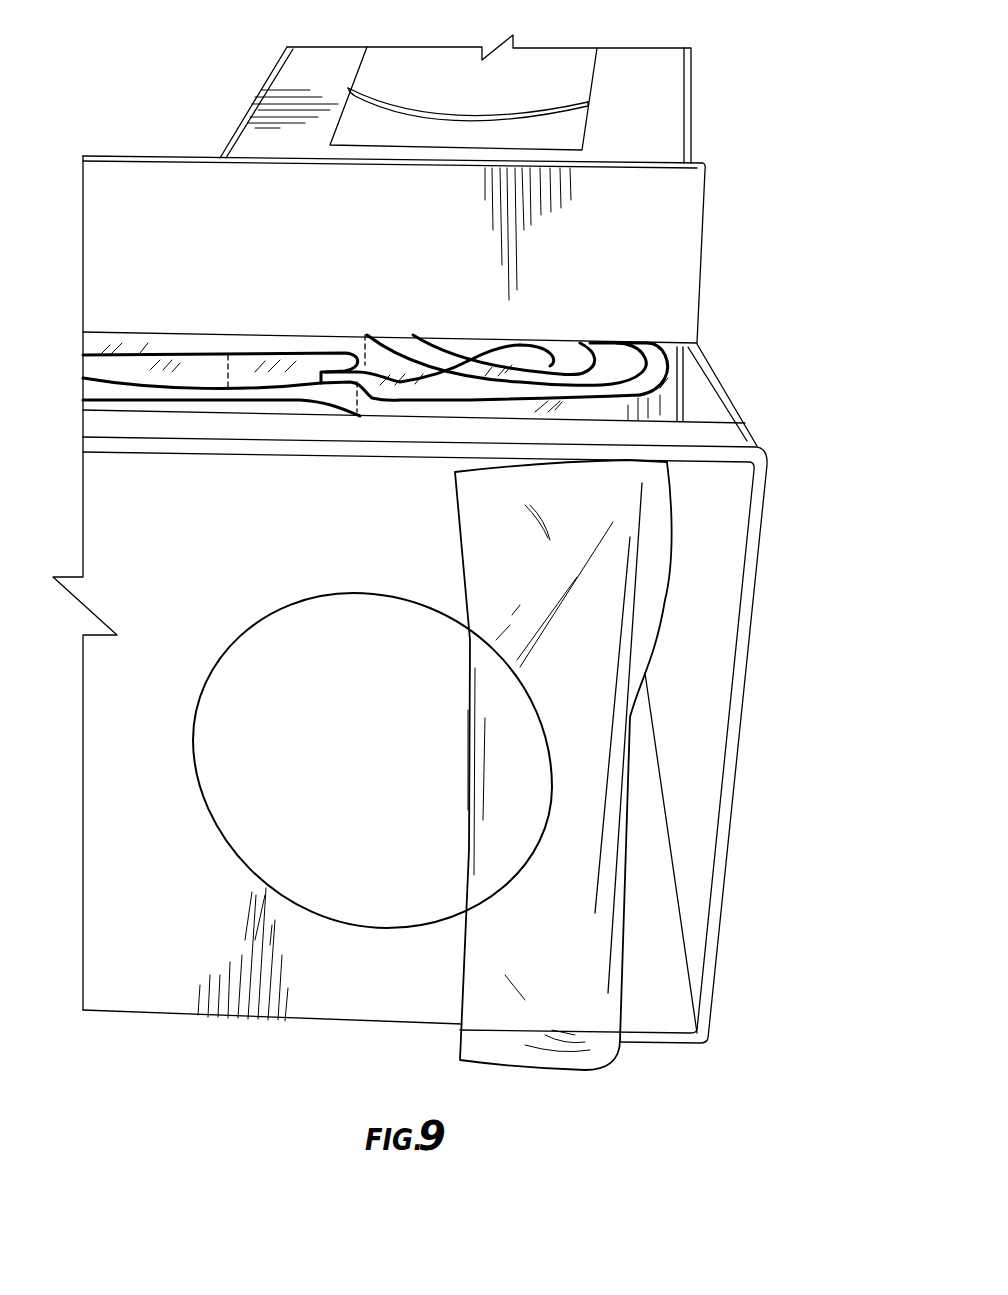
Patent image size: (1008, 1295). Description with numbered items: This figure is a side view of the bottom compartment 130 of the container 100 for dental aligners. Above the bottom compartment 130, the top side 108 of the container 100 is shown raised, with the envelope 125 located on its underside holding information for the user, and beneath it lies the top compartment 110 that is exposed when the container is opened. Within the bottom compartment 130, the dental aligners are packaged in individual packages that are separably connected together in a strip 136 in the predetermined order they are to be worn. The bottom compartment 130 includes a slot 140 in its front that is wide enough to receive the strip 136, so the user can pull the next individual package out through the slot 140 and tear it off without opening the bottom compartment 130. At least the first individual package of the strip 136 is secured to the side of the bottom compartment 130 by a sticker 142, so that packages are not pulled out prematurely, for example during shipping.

The container 100 is at (788, 243).
The top side 108 is at (645, 62).
The top compartment 110 is at (290, 131).
The envelope 125 is at (573, 72).
The bottom compartment 130 is at (697, 405).
The strip 136 is at (288, 402).
The slot 140 is at (635, 790).
The sticker 142 is at (322, 618).